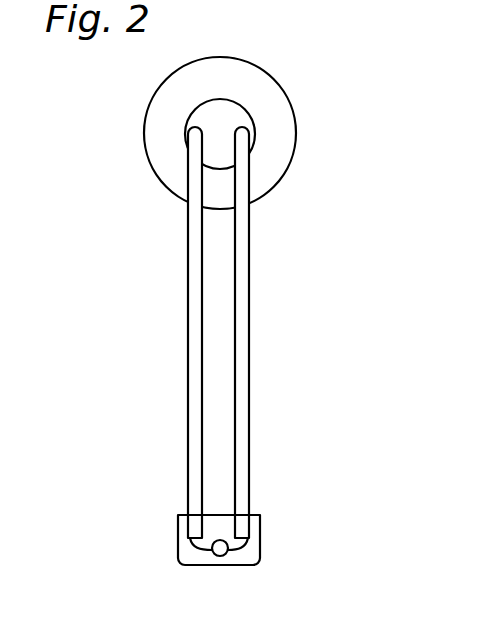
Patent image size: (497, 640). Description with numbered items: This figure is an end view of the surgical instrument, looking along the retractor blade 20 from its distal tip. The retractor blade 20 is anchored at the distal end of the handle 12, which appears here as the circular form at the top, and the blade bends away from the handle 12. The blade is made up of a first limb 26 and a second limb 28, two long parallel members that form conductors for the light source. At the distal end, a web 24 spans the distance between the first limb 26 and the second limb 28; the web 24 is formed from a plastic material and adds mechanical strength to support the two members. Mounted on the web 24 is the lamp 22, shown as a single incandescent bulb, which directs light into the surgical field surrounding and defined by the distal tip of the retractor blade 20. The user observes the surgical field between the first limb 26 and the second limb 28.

The handle 12 is at (230, 102).
The retractor blade 20 is at (241, 358).
The lamp 22 is at (221, 556).
The web 24 is at (260, 537).
The first limb 26 is at (187, 372).
The second limb 28 is at (250, 418).